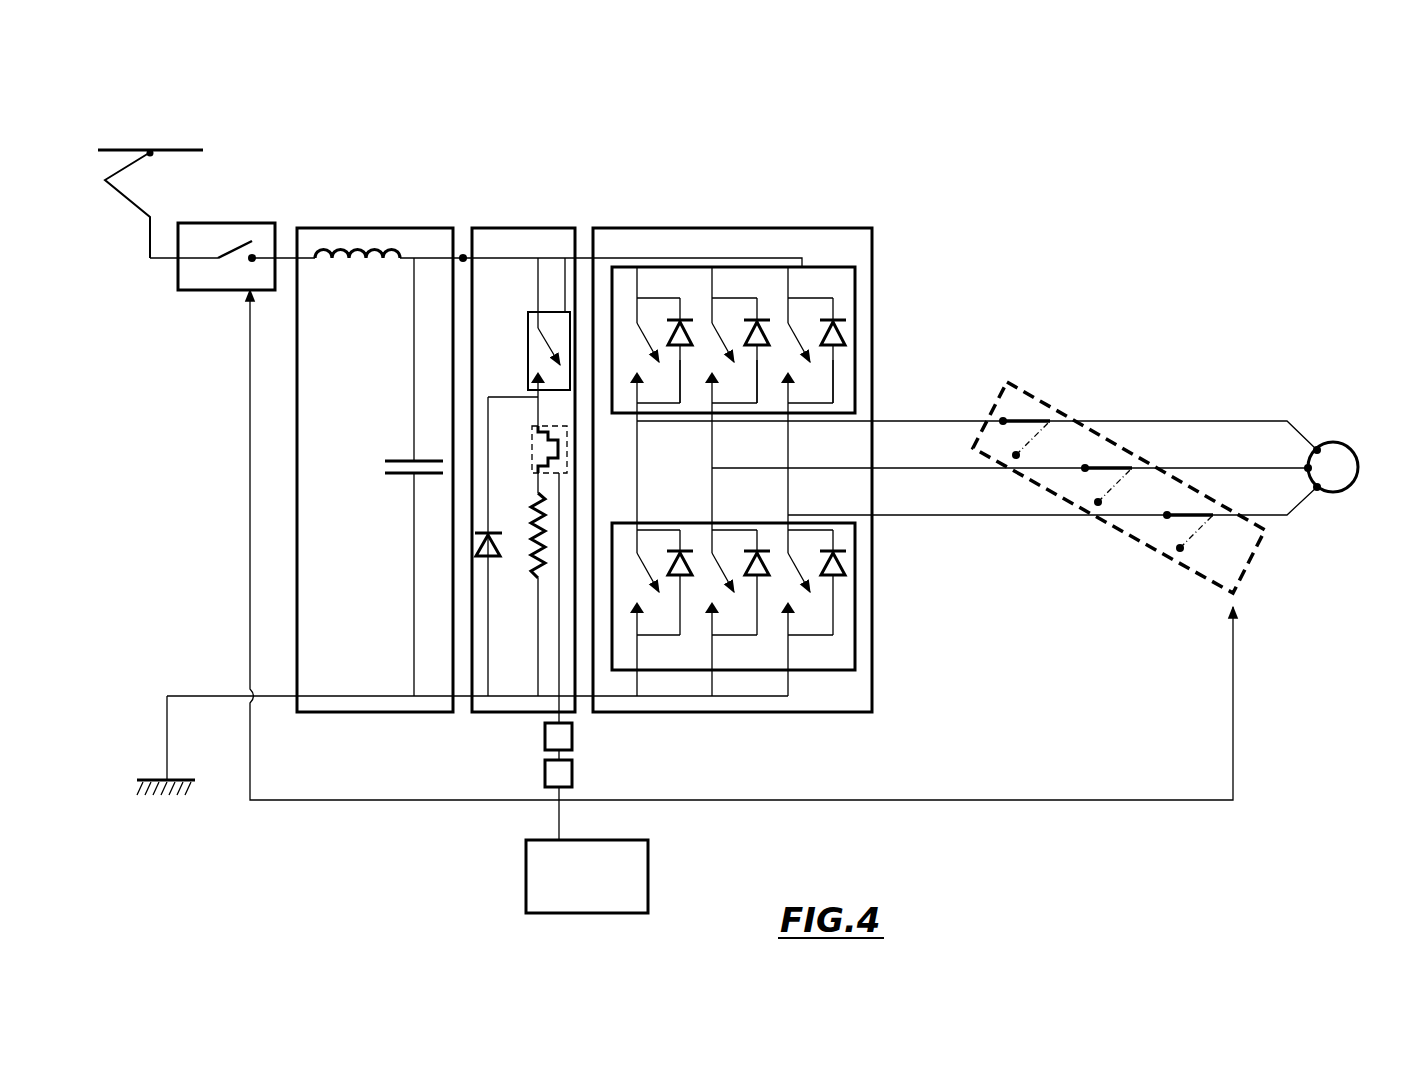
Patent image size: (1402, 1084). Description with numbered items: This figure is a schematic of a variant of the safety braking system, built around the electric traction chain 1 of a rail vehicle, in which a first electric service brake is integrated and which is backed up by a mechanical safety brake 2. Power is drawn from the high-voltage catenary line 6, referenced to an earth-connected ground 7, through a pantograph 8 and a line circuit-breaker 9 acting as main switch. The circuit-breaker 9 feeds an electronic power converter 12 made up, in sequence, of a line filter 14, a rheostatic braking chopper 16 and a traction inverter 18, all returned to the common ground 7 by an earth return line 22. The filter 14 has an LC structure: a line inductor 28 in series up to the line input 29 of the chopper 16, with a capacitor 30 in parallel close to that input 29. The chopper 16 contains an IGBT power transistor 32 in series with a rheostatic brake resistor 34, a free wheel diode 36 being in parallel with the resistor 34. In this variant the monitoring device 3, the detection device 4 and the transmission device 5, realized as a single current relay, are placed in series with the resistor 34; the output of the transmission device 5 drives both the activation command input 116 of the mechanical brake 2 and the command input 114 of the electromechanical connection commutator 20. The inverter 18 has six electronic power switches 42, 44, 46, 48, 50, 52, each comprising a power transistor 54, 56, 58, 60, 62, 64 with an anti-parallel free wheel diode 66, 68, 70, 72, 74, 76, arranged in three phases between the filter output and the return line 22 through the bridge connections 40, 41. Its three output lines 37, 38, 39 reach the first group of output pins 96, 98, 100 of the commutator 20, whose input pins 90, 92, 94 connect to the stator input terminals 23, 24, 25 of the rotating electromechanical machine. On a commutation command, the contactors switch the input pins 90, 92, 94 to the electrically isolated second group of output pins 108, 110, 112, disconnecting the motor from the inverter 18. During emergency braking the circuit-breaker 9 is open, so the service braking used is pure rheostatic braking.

The electric traction chain 1 is at (1127, 237).
The safety brake 2 is at (587, 876).
The monitoring device 3 is at (572, 449).
The detection device 4 is at (573, 735).
The transmission device 5 is at (573, 772).
The catenary line 6 is at (180, 152).
The ground 7 is at (150, 778).
The pantograph 8 is at (125, 203).
The line circuit-breaker 9 is at (226, 292).
The electronic power converter 12 is at (616, 132).
The line filter 14 is at (368, 226).
The rheostatic braking chopper 16 is at (516, 226).
The traction inverter 18 is at (667, 226).
The electromechanical connection commutator 20 is at (1004, 376).
The earth return line 22 is at (240, 692).
The electrical input terminal 23 is at (1317, 450).
The electrical input terminal 24 is at (1308, 468).
The electrical input terminal 25 is at (1317, 490).
The line inductor 28 is at (352, 268).
The line input 29 is at (463, 254).
The capacitor 30 is at (405, 460).
The power transistor 32 is at (552, 308).
The rheostatic brake resistor 34 is at (533, 515).
The free wheel diode 36 is at (495, 560).
The alternating three-phase output line 37 is at (652, 424).
The alternating three-phase output line 38 is at (783, 468).
The alternating three-phase output line 39 is at (908, 516).
The positive bus 40 is at (806, 254).
The negative bus 41 is at (749, 674).
The electronic power switch 42 is at (682, 312).
The electronic power switch 44 is at (760, 312).
The electronic power switch 46 is at (842, 312).
The electronic power switch 48 is at (683, 544).
The electronic power switch 50 is at (760, 544).
The electronic power switch 52 is at (841, 544).
The power transistor 54 is at (645, 338).
The power transistor 56 is at (720, 340).
The power transistor 58 is at (798, 325).
The power transistor 60 is at (645, 565).
The power transistor 62 is at (724, 565).
The power transistor 64 is at (800, 548).
The free wheel diode 66 is at (682, 360).
The free wheel diode 68 is at (760, 360).
The free wheel diode 70 is at (833, 378).
The free wheel diode 72 is at (690, 578).
The free wheel diode 74 is at (767, 578).
The free wheel diode 76 is at (838, 578).
The input pin 90 is at (1050, 421).
The input pin 92 is at (1132, 468).
The input pin 94 is at (1213, 515).
The output pin 96 is at (1003, 421).
The output pin 98 is at (1085, 468).
The output pin 100 is at (1167, 515).
The output pin 108 is at (1012, 456).
The output pin 110 is at (1098, 502).
The output pin 112 is at (1180, 548).
The command input 114 is at (1236, 600).
The activation command input 116 is at (557, 840).